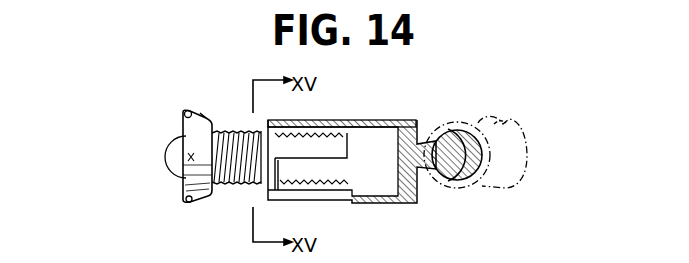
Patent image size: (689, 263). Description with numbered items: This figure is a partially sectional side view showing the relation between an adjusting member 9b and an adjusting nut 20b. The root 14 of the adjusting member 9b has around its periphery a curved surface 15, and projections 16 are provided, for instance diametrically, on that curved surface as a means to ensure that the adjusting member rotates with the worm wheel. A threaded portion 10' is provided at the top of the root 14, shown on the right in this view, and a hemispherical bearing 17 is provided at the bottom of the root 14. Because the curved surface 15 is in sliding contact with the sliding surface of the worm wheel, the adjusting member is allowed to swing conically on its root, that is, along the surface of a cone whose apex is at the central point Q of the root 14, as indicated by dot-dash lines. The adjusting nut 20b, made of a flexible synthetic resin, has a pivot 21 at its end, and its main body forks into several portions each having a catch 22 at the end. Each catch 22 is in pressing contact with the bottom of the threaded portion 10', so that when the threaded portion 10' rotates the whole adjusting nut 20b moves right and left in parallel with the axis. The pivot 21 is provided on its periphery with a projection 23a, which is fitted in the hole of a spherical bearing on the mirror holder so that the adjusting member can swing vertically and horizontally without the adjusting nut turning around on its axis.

The root 14 is at (183, 126).
The curved surface 15 is at (204, 117).
The projections 16 is at (182, 112).
The hemispherical bearing 17 is at (167, 157).
The central point Q is at (188, 160).
The threaded portion 10' is at (289, 151).
The catch 22 is at (371, 121).
The adjusting member 9b is at (322, 206).
The adjusting nut 20b is at (420, 121).
The pivot 21 is at (484, 157).
The projection 23a is at (514, 121).